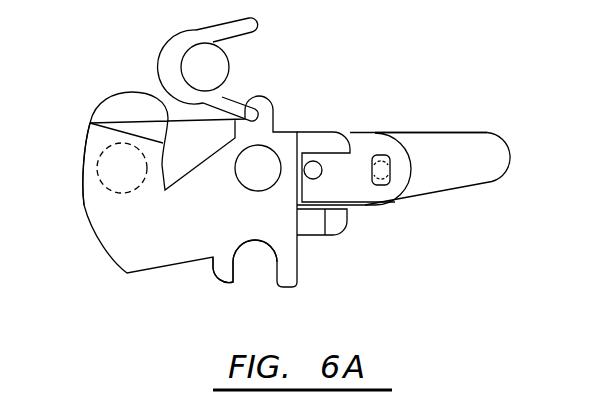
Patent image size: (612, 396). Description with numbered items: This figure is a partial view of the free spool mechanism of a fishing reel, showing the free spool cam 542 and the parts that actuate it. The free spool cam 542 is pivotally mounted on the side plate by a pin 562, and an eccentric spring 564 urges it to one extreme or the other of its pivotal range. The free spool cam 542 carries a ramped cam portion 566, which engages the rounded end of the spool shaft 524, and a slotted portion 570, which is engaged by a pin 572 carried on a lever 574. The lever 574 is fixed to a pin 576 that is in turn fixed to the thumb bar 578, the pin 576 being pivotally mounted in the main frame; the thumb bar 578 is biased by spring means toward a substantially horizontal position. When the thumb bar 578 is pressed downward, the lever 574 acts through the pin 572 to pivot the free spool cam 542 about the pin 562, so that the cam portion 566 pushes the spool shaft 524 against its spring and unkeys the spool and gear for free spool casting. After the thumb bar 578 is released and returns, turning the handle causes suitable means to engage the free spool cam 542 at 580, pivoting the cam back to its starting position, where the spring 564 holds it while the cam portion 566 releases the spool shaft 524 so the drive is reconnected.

The spool shaft 524 is at (122, 150).
The free spool cam 542 is at (120, 247).
The pin 562 is at (246, 176).
The eccentric spring 564 is at (232, 52).
The cam portion 566 is at (92, 178).
The slotted portion 570 is at (325, 228).
The pin 572 is at (316, 160).
The lever 574 is at (365, 150).
The pin 576 is at (385, 162).
The thumb bar 578 is at (478, 152).
The engagement point of free spool cam 580 is at (233, 264).